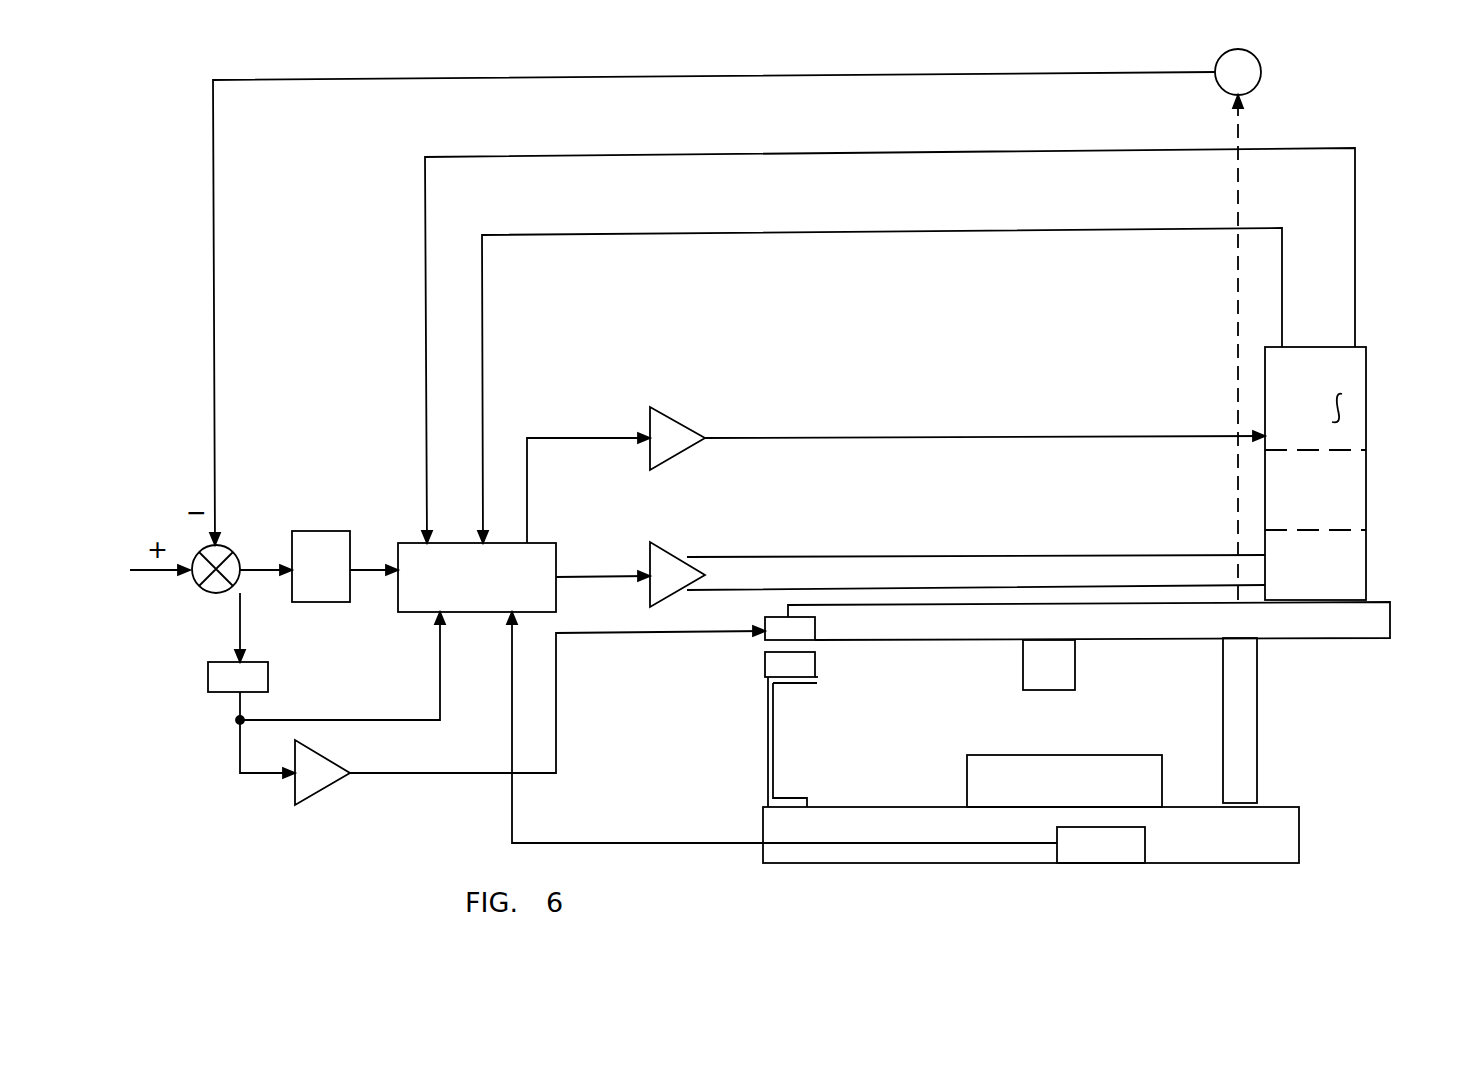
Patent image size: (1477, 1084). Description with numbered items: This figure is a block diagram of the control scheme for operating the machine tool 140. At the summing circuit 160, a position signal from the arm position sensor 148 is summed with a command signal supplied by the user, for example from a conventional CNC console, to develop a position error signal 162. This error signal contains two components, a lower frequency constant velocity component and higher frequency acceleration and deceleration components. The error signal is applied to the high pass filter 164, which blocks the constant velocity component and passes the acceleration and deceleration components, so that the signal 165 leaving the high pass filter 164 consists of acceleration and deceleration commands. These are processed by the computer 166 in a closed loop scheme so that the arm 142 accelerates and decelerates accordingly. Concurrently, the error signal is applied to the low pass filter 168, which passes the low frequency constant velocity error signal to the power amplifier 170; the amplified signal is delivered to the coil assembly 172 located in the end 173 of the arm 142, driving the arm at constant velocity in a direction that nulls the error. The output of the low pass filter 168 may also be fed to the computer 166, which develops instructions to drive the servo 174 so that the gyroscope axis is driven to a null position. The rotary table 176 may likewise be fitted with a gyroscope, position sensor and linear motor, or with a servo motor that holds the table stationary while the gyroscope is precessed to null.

The machine tool 140 is at (990, 680).
The arm 142 is at (1150, 638).
The arm position sensor 148 is at (1262, 69).
The summing circuit 160 is at (203, 553).
The position error signal 162 is at (262, 567).
The high pass filter 164 is at (330, 530).
The signal from high pass filter 165 is at (370, 573).
The computer 166 is at (505, 593).
The low pass filter 168 is at (208, 680).
The power amplifier 170 is at (322, 790).
The coil assembly 172 is at (763, 643).
The end of arm 173 is at (815, 606).
The servo 174 is at (1340, 408).
The rotary table 176 is at (1048, 755).